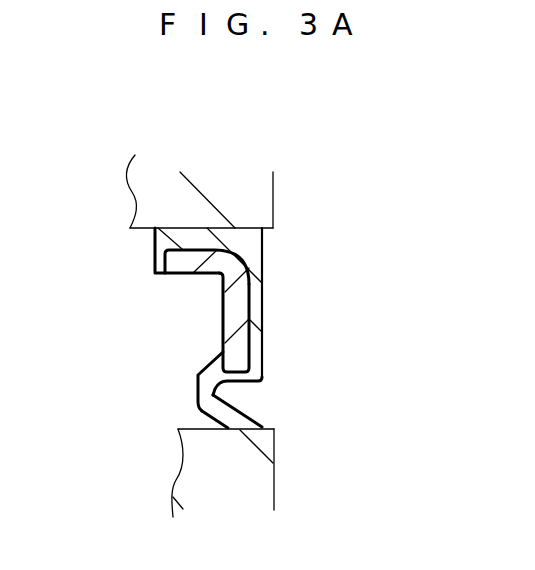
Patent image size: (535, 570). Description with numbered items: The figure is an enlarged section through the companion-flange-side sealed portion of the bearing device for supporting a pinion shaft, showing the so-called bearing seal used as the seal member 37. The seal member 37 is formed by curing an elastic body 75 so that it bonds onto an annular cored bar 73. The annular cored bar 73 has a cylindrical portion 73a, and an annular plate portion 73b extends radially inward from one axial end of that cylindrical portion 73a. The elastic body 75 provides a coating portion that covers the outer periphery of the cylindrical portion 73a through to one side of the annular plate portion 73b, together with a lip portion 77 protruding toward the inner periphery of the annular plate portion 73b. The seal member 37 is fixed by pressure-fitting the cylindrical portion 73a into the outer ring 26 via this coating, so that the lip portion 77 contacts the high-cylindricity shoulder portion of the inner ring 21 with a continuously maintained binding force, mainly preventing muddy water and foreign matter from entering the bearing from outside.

The outer ring 26 is at (262, 204).
The seal member 37 is at (265, 267).
The annular cored bar 73 is at (143, 311).
The cylindrical portion 73a is at (180, 264).
The annular plate portion 73b is at (235, 307).
The elastic body 75 is at (262, 345).
The lip portion 77 is at (229, 417).
The inner ring 21 is at (257, 482).